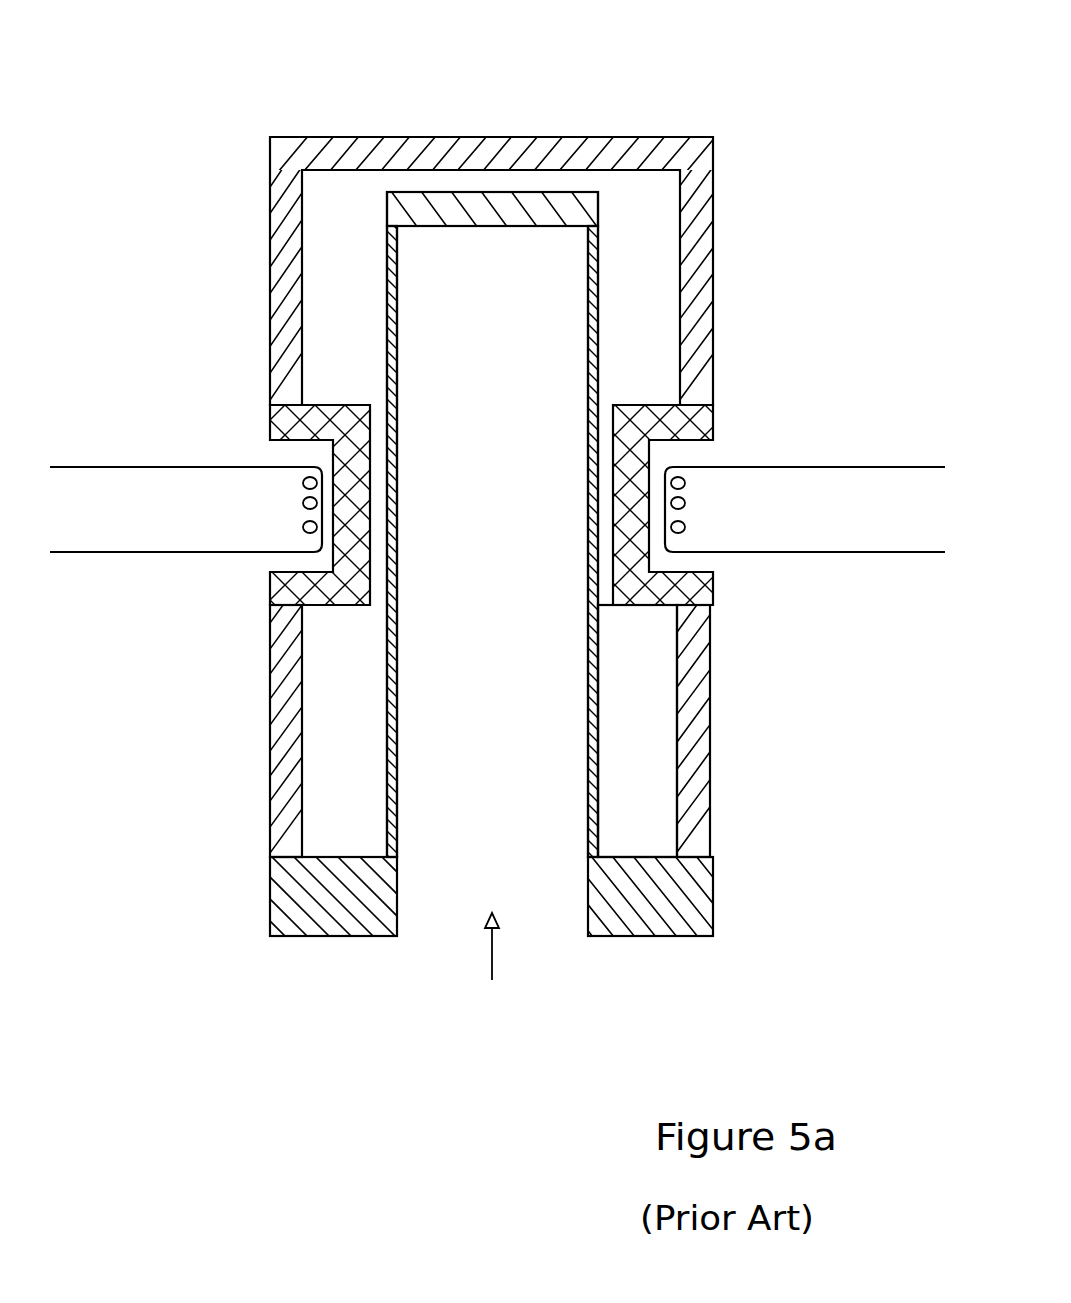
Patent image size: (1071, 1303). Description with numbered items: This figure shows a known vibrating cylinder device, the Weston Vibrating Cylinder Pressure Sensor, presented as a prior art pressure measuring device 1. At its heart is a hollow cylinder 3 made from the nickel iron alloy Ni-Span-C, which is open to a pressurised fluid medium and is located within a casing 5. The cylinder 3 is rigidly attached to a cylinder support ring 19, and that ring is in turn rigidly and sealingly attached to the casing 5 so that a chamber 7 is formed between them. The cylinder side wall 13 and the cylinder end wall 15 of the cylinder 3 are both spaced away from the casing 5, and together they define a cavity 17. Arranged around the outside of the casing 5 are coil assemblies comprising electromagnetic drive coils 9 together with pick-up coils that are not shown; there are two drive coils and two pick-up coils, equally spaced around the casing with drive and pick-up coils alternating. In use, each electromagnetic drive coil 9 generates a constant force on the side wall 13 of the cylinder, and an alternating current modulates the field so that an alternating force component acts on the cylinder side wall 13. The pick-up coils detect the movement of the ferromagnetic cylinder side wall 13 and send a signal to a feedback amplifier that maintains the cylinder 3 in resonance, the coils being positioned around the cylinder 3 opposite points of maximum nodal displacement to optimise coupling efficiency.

The pressure measuring device 1 is at (312, 1017).
The hollow cylinder 3 is at (587, 743).
The casing 5 is at (275, 763).
The chamber 7 is at (655, 827).
The electromagnetic drive coils 9 is at (822, 451).
The cylinder side wall 13 is at (595, 317).
The cylinder end wall 15 is at (490, 195).
The cavity 17 is at (490, 969).
The cylinder support ring 19 is at (687, 917).